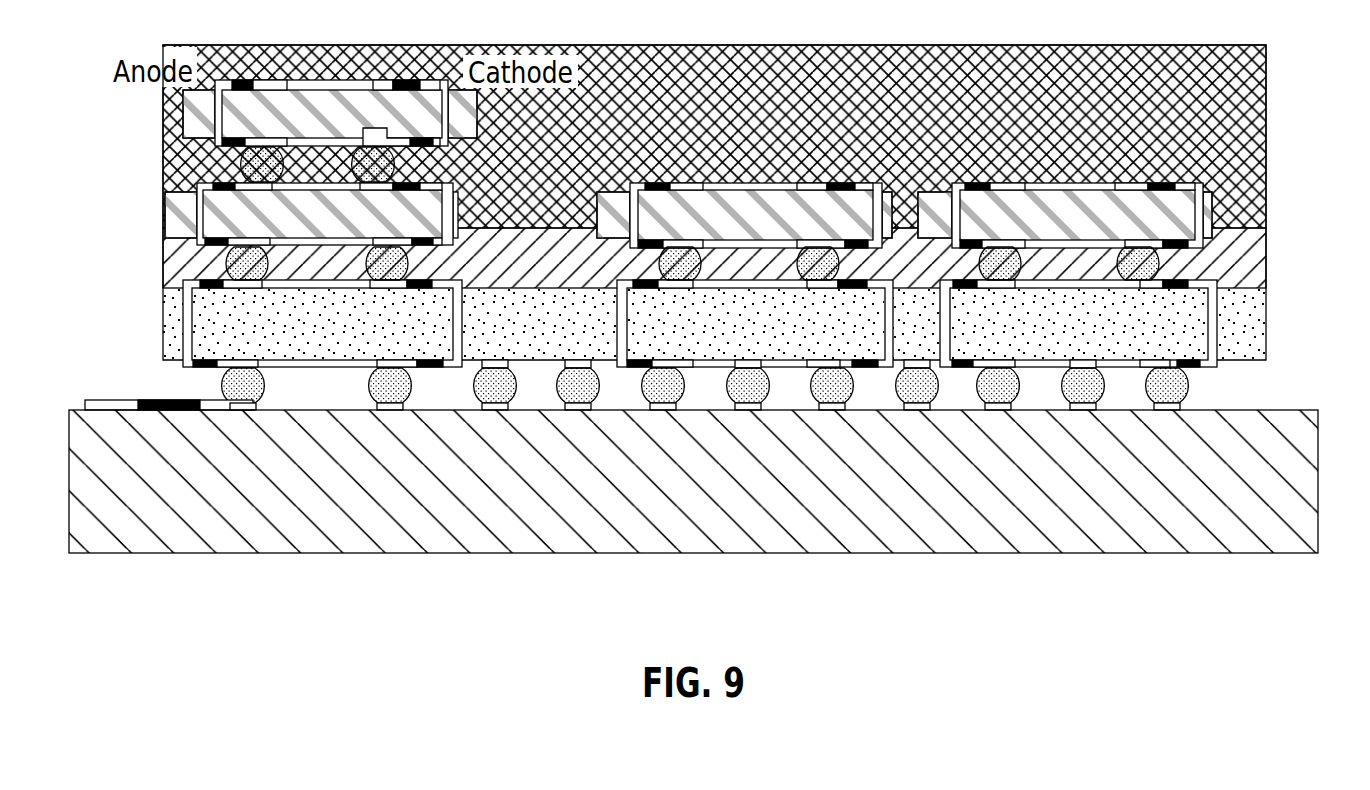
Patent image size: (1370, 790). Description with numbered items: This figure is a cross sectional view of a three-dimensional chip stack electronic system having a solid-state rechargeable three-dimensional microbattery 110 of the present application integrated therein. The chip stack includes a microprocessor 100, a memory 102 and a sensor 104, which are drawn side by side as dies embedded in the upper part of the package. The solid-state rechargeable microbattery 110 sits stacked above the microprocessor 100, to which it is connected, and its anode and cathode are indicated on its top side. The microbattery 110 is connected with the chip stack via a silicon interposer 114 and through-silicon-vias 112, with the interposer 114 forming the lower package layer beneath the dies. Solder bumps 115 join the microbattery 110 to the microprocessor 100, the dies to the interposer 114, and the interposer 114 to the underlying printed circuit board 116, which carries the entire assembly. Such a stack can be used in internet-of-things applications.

The microprocessor 100 is at (339, 228).
The memory 102 is at (771, 228).
The sensor 104 is at (1096, 228).
The solid-state rechargeable 3D microbattery 110 is at (341, 128).
The through-silicon-vias 112 is at (158, 288).
The silicon interposer 114 is at (774, 339).
The solder bumps 115 is at (232, 267).
The printed circuit board 116 is at (721, 493).